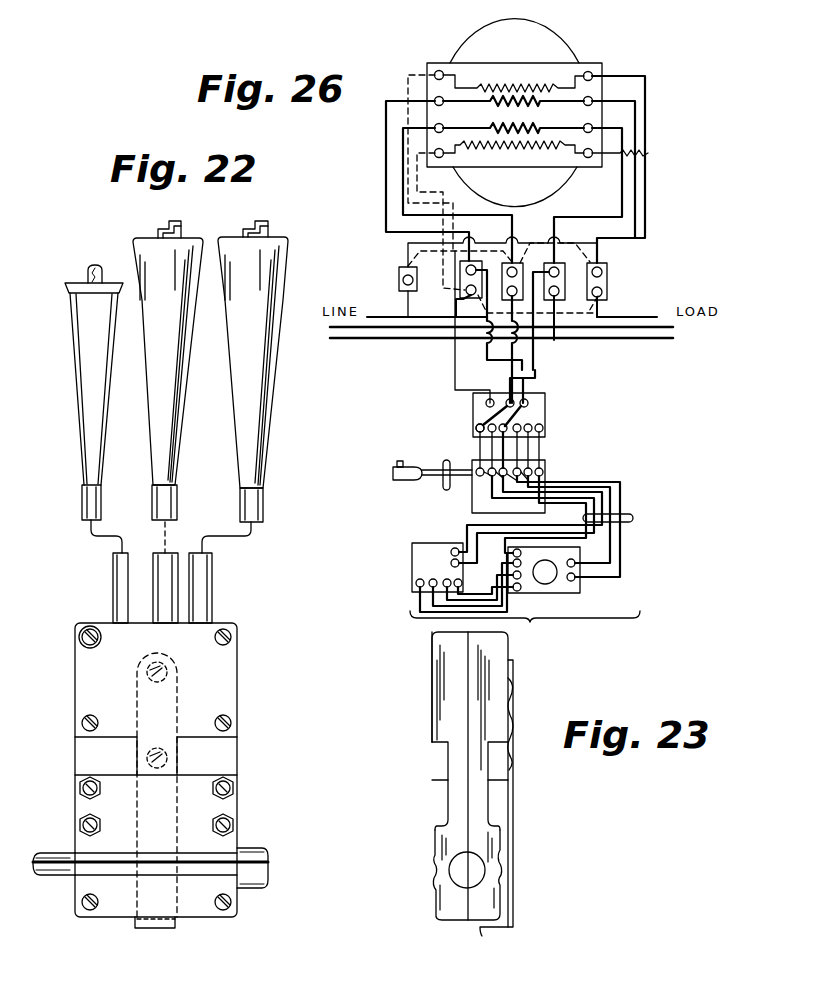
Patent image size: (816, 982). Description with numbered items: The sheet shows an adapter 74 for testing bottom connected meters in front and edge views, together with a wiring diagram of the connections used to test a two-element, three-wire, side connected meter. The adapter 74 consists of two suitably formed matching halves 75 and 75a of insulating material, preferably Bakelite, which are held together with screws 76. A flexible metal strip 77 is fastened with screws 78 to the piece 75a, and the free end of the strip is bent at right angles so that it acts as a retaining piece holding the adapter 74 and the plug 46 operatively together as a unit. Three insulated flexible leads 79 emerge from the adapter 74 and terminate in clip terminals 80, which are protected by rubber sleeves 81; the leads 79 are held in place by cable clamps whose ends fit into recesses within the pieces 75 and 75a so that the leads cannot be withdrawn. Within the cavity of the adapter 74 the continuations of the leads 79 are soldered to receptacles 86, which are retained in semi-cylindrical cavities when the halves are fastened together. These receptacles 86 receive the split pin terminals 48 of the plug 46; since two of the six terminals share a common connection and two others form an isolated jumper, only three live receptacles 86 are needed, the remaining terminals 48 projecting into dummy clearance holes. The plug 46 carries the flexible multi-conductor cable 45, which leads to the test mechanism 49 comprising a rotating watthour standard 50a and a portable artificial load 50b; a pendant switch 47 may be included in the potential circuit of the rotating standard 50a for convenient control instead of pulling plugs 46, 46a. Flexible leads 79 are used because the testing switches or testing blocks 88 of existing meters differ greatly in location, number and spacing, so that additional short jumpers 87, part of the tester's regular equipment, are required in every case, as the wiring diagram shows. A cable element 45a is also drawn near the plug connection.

In FIG. 22, the clip terminals 80 is at (101, 261).
In FIG. 22, the rubber sleeves 81 is at (176, 379).
In FIG. 22, the insulated flexible leads 79 is at (198, 579).
In FIG. 26, the insulated flexible leads 79 is at (521, 375).
In FIG. 22, the adapter half 75 is at (228, 680).
In FIG. 23, the adapter half 75 is at (440, 652).
In FIG. 23, the adapter half 75a is at (490, 647).
In FIG. 22, the screws 76 is at (79, 637).
In FIG. 22, the adapter 74 is at (140, 785).
In FIG. 26, the adapter 74 is at (556, 413).
In FIG. 22, the flexible metal strip 77 is at (177, 803).
In FIG. 23, the flexible metal strip 77 is at (506, 808).
In FIG. 23, the screws 78 is at (512, 752).
In FIG. 22, the plug 46a is at (108, 912).
In FIG. 23, the plug 46a is at (440, 841).
In FIG. 23, the test mechanism 49 is at (529, 632).
In FIG. 26, the test mechanism 49 is at (525, 626).
In FIG. 26, the jumpers 87 is at (440, 210).
In FIG. 26, the testing switches or testing blocks 88 is at (607, 285).
In FIG. 26, the receptacles 86 is at (476, 428).
In FIG. 26, the split pin terminals 48 is at (480, 447).
In FIG. 26, the plug 46 is at (472, 508).
In FIG. 26, the flexible multi-conductor cable 45 is at (634, 518).
In FIG. 26, the pendant switch 47 is at (405, 481).
In FIG. 26, the cable grommet 45a is at (447, 491).
In FIG. 26, the artificial load 50b is at (417, 548).
In FIG. 26, the rotating watthour standard 50a is at (575, 590).